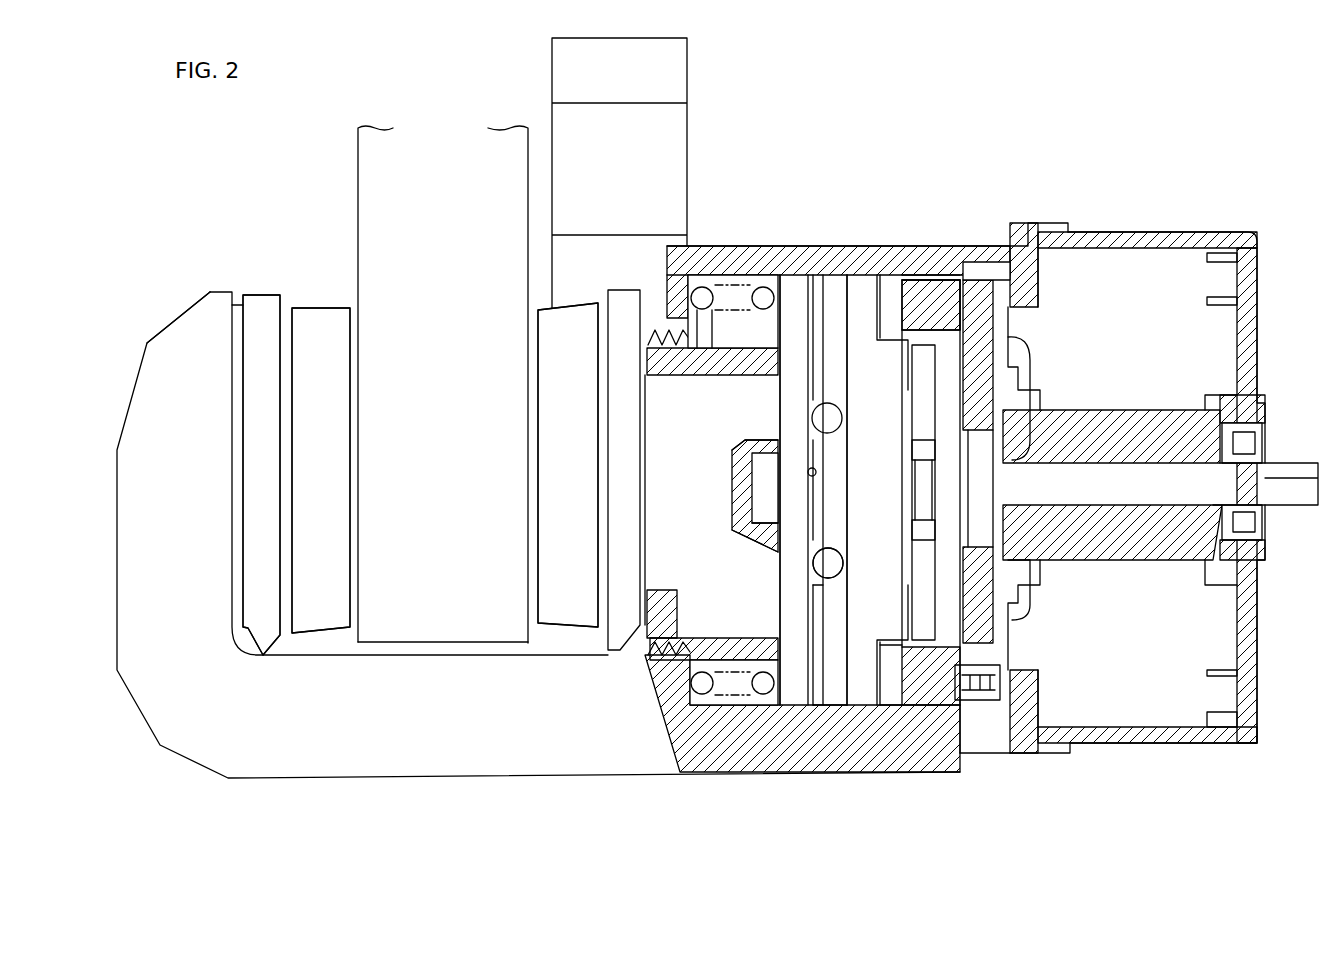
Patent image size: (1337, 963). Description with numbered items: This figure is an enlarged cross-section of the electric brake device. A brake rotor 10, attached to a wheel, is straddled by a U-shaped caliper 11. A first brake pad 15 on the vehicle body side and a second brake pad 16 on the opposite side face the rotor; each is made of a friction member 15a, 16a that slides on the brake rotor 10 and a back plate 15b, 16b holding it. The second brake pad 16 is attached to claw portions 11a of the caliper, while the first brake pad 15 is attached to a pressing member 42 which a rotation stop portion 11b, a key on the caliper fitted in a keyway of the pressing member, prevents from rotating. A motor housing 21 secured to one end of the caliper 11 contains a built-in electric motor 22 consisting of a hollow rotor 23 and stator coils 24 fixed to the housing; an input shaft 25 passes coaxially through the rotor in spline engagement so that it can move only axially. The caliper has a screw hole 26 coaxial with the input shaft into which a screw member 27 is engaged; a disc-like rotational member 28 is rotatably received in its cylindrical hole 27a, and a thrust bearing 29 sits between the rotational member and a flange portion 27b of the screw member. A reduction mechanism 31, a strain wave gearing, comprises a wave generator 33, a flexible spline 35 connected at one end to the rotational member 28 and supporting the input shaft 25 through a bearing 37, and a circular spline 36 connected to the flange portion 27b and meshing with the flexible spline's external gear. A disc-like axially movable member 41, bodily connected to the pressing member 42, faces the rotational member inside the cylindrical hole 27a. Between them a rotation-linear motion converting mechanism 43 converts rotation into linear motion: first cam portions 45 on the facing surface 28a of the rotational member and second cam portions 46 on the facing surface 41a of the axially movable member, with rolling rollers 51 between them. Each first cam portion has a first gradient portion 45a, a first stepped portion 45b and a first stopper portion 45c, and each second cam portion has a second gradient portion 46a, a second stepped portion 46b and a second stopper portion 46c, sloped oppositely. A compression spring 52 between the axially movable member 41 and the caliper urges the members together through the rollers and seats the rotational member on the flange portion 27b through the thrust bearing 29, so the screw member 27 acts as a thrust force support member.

The brake rotor 10 is at (447, 625).
The caliper 11 is at (548, 758).
The claw portions 11a is at (222, 315).
The rotation stop portion 11b is at (665, 322).
The first brake pad 15 is at (593, 642).
The friction member 15a is at (555, 360).
The back plate 15b is at (625, 303).
The second brake pad 16 is at (320, 644).
The friction member 16a is at (325, 323).
The back plate 16b is at (268, 315).
The motor housing 21 is at (1130, 232).
The electric motor 22 is at (1186, 240).
The rotor 23 is at (1163, 420).
The stator coils 24 is at (1148, 705).
The input shaft 25 is at (1297, 492).
The screw hole 26 is at (933, 288).
The screw member 27 is at (770, 272).
The cylindrical hole 27a is at (780, 702).
The flange portion 27b is at (958, 284).
The rotational member 28 is at (878, 640).
The facing surface 28a is at (955, 702).
The thrust bearing 29 is at (893, 288).
The reduction mechanism 31 is at (1012, 352).
The wave generator 33 is at (1000, 622).
The flexible spline 35 is at (996, 378).
The circular spline 36 is at (1000, 280).
The bearing 37 is at (925, 440).
The axially movable member 41 is at (818, 290).
The facing surface 41a is at (808, 473).
The pressing member 42 is at (678, 702).
The rotation-linear motion converting mechanism 43 is at (845, 650).
The first cam portions 45 is at (846, 288).
The first gradient portion 45a is at (752, 440).
The first stepped portion 45b is at (775, 541).
The first stopper portion 45c is at (752, 525).
The second cam portions 46 is at (833, 296).
The second gradient portion 46a is at (822, 702).
The second stepped portion 46b is at (813, 568).
The second stopper portion 46c is at (820, 594).
The rolling rollers 51 is at (813, 410).
The compression spring 52 is at (706, 288).